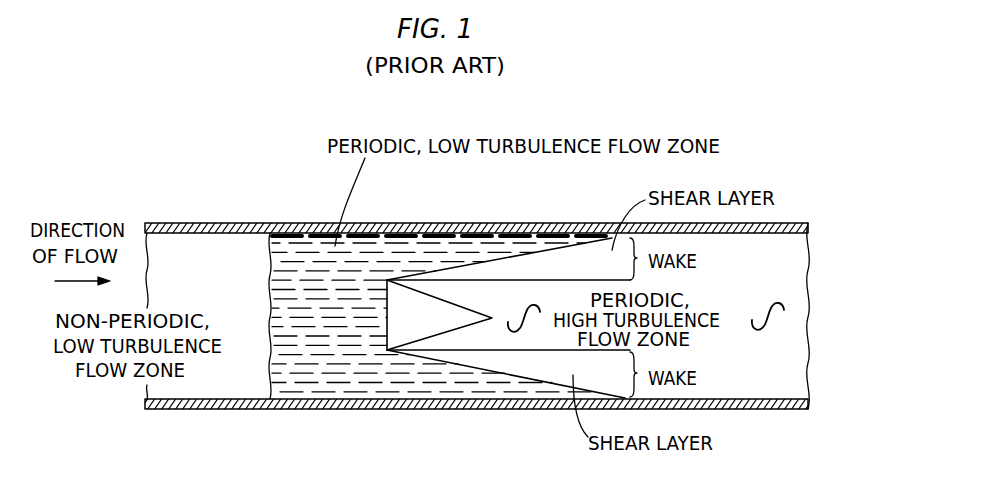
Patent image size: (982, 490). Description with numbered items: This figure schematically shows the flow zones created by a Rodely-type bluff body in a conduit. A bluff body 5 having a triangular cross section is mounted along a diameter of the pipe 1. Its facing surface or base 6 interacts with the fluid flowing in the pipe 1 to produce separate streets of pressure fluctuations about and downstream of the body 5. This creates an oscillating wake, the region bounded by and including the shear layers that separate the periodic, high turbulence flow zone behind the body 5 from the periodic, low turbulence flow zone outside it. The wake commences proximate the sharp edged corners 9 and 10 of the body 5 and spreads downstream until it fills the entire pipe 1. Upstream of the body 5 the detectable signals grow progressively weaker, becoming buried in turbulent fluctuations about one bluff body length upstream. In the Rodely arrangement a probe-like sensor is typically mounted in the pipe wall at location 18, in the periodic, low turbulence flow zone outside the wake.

The pipe 1 is at (292, 222).
The bluff body 5 is at (397, 329).
The facing surface or base 6 is at (387, 310).
The sharp edged corner 9 is at (472, 321).
The sharp edged corner 10 is at (390, 352).
The location 18 is at (529, 223).